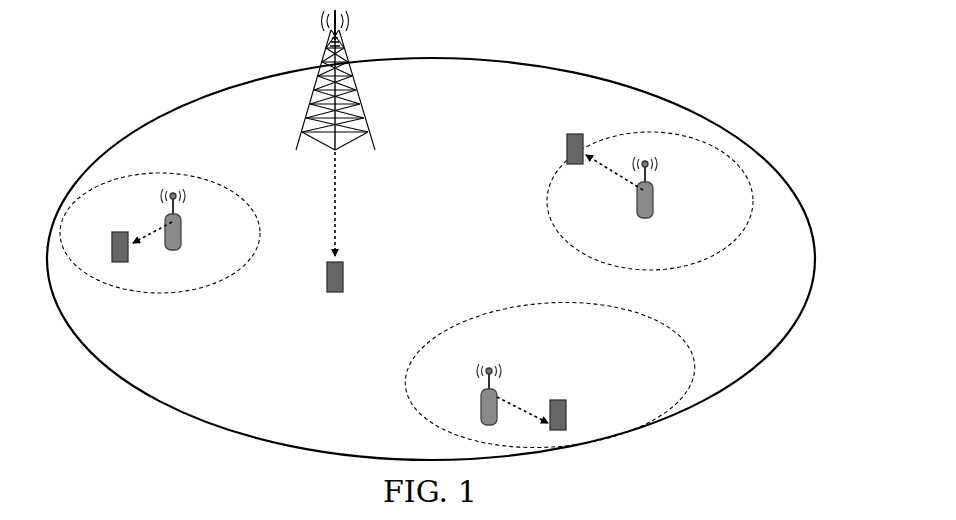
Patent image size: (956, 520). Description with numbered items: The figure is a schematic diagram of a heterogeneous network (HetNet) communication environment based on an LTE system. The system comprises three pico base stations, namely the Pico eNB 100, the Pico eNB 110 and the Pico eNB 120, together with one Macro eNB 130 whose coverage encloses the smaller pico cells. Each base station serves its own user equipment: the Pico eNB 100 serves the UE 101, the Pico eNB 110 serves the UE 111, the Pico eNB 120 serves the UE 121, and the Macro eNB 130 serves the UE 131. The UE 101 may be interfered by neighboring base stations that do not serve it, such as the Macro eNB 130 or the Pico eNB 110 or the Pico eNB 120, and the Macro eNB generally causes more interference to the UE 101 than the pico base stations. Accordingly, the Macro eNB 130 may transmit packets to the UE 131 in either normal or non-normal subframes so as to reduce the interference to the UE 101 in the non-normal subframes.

The Pico eNB 100 is at (200, 235).
The UE 101 is at (116, 249).
The Pico eNB 110 is at (443, 409).
The UE 111 is at (558, 396).
The Pico eNB 120 is at (670, 201).
The UE 121 is at (600, 134).
The Macro eNB 130 is at (380, 94).
The UE 131 is at (360, 227).